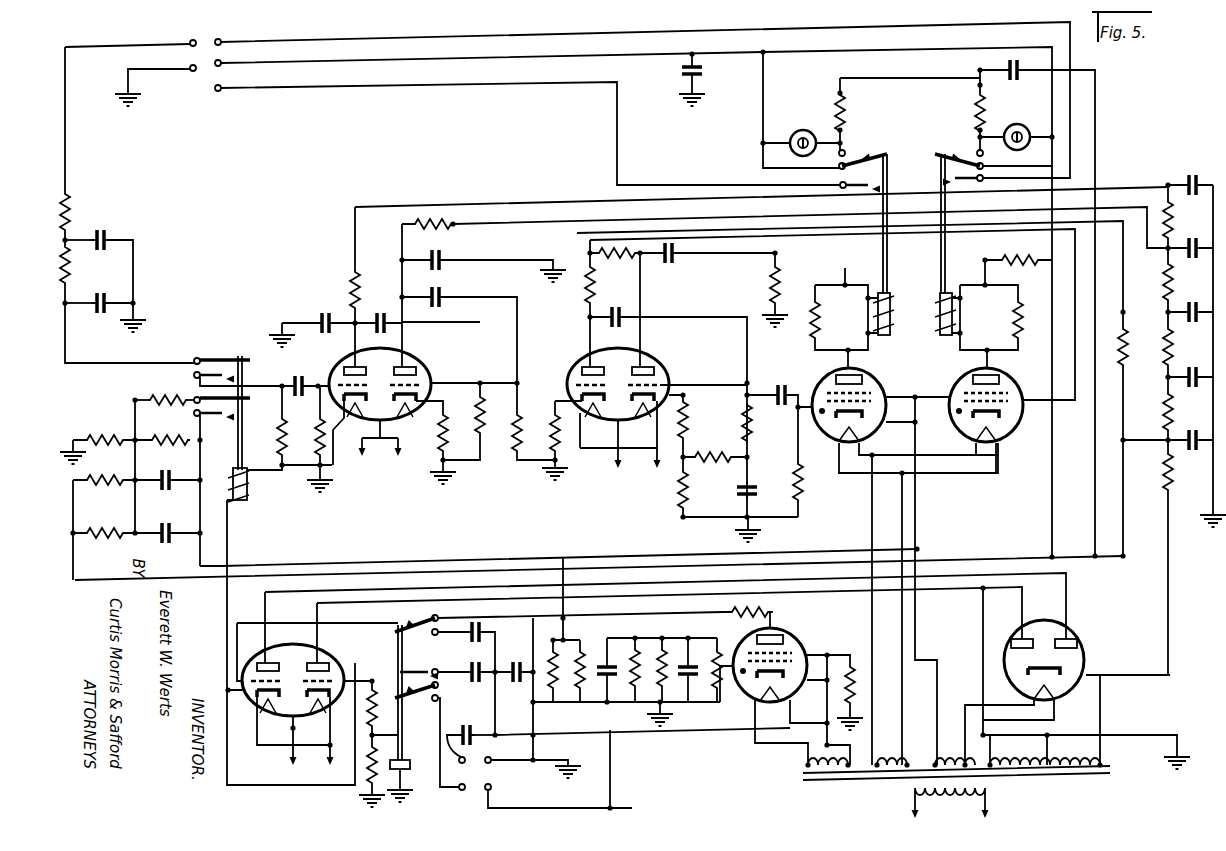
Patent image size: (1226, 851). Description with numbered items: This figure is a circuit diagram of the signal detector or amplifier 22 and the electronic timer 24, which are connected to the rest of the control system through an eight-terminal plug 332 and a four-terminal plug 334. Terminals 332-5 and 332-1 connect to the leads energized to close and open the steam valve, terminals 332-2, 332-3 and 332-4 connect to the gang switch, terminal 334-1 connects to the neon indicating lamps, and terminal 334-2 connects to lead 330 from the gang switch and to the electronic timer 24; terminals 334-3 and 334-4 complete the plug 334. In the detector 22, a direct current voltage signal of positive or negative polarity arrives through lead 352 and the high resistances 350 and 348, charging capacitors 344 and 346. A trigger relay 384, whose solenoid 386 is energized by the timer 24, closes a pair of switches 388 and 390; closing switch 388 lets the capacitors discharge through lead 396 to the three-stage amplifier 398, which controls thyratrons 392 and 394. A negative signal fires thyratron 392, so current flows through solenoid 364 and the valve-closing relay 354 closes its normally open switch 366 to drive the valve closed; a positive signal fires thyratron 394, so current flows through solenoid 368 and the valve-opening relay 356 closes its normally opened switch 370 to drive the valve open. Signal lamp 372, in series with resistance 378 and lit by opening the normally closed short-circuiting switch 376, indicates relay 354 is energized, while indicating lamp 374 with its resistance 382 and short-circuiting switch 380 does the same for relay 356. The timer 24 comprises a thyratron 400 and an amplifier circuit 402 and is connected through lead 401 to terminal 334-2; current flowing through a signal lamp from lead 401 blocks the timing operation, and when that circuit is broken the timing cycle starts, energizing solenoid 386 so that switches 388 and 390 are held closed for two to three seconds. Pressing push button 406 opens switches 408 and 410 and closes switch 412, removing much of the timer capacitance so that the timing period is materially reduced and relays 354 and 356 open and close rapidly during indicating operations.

The signal detector or amplifier 22 is at (518, 132).
The electronic timer 24 is at (720, 768).
The lead 330 is at (614, 806).
The eight-terminal plug 332 is at (194, 90).
The terminal 332-1 is at (225, 46).
The terminal 332-2 is at (130, 50).
The terminal 332-3 is at (155, 85).
The terminal 332-4 is at (225, 67).
The terminal 332-5 is at (225, 92).
The four-terminal plug 334 is at (466, 794).
The terminal 334-1 is at (489, 758).
The terminal 334-2 is at (491, 790).
The terminal 334-3 is at (460, 757).
The terminal 334-4 is at (465, 786).
The capacitor 344 is at (104, 232).
The capacitor 346 is at (133, 295).
The high resistance 348 is at (68, 200).
The high resistance 350 is at (70, 262).
The lead 352 is at (66, 143).
The valve-closing relay 354 is at (886, 142).
The valve-opening relay 356 is at (942, 142).
The solenoid 364 is at (876, 318).
The normally open switch 366 is at (846, 190).
The solenoid 368 is at (956, 316).
The normally opened switch 370 is at (982, 183).
The signal lamp 372 is at (797, 130).
The indicating lamp 374 is at (1024, 126).
The short-circuiting switch 376 is at (838, 180).
The resistance 378 is at (838, 93).
The short-circuiting switch 380 is at (985, 168).
The resistance 382 is at (993, 62).
The trigger relay 384 is at (252, 505).
The solenoid 386 is at (232, 480).
The switch 388 is at (194, 375).
The switch 390 is at (194, 414).
The thyratron 392 is at (893, 363).
The thyratron 394 is at (959, 379).
The lead 396 is at (258, 380).
The three-stage amplifier 398 is at (322, 278).
The thyratron 400 is at (790, 633).
The lead 401 is at (610, 767).
The amplifier circuit 402 is at (262, 792).
The push button 406 is at (396, 772).
The switch 408 is at (428, 698).
The switch 410 is at (433, 618).
The switch 412 is at (430, 671).